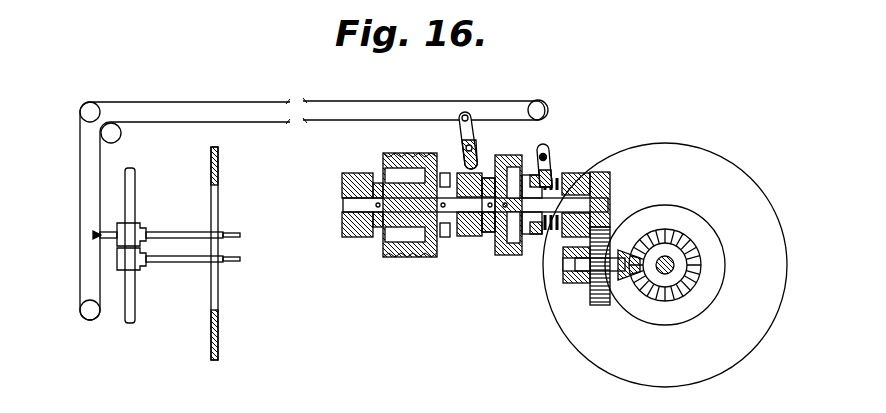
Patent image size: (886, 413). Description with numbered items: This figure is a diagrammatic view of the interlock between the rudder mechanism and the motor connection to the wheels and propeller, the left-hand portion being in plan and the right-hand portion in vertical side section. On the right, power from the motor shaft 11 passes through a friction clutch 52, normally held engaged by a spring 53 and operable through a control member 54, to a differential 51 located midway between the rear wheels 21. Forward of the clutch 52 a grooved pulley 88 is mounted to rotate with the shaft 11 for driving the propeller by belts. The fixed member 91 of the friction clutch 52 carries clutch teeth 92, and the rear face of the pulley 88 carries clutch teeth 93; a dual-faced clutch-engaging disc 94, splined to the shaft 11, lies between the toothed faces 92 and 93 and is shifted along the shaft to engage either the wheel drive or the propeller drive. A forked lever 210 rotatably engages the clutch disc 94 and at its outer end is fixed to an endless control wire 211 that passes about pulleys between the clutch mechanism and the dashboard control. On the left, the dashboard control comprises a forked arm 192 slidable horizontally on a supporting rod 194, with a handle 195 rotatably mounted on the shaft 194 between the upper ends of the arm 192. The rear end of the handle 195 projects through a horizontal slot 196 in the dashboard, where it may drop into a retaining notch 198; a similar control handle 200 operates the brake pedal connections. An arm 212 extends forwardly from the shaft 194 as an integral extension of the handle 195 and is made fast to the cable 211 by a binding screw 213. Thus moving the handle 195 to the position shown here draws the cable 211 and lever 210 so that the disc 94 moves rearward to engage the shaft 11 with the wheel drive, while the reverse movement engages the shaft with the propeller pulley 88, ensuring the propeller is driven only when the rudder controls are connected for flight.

The motor shaft 11 is at (362, 203).
The rear wheels 21 is at (697, 155).
The differential 51 is at (628, 276).
The friction clutch 52 is at (534, 245).
The spring 53 is at (556, 186).
The control member 54 is at (547, 175).
The grooved pulley 88 is at (410, 257).
The fixed member of the friction clutch 91 is at (508, 257).
The clutch teeth 92 is at (488, 236).
The clutch teeth 93 is at (445, 237).
The dual-faced clutch-engaging disc 94 is at (474, 236).
The forked arm 192 is at (131, 230).
The supporting rod 194 is at (130, 295).
The handle 195 is at (185, 262).
The horizontal slot 196 is at (214, 201).
The retaining notch 198 is at (213, 249).
The control handle 200 is at (178, 232).
The forked lever 210 is at (463, 132).
The endless control wire 211 is at (80, 177).
The arm 212 is at (104, 237).
The binding screw 213 is at (94, 235).